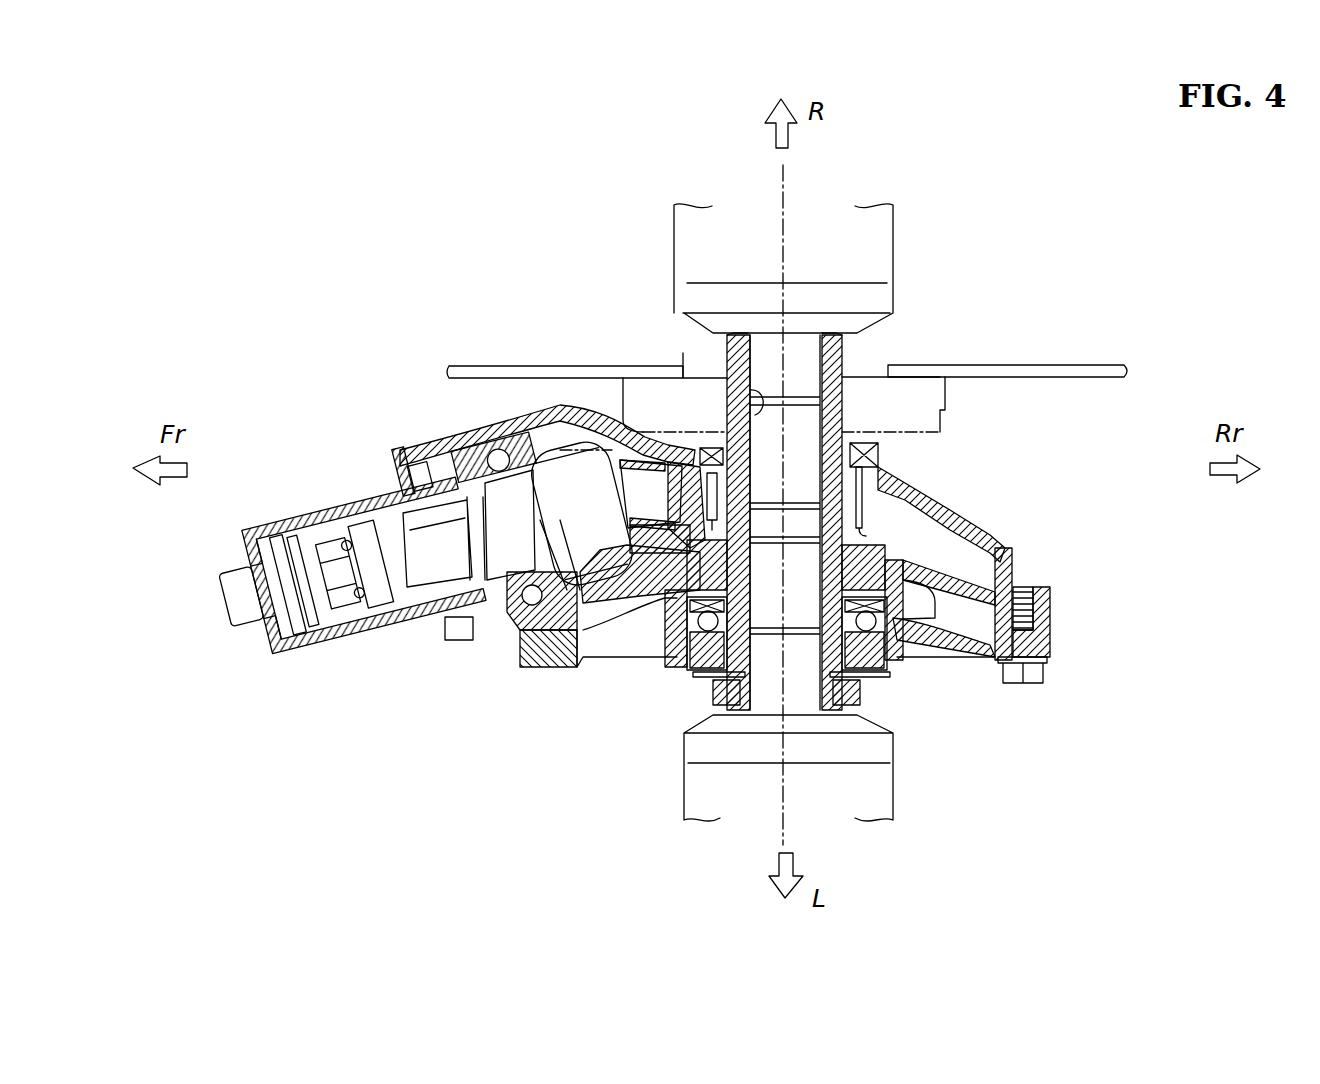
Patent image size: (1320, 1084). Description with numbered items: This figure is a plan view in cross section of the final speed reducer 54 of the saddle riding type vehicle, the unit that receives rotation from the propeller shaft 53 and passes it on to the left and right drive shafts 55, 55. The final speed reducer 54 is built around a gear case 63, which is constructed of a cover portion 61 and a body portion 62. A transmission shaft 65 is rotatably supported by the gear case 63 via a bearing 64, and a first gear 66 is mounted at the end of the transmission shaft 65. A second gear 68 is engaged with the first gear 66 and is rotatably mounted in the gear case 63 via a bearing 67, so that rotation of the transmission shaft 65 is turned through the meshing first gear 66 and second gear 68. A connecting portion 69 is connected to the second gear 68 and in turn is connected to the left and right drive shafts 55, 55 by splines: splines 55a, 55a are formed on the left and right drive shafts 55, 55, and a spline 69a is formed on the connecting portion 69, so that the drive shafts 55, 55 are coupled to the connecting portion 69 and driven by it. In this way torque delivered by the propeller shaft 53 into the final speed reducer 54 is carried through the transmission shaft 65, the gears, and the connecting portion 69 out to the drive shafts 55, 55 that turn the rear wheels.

The propeller shaft 53 is at (247, 657).
The final speed reducer 54 is at (462, 278).
The drive shaft 55 is at (880, 463).
The spline 55a is at (810, 490).
The cover portion 61 is at (1053, 647).
The body portion 62 is at (1007, 553).
The gear case 63 is at (1123, 618).
The bearing 64 is at (543, 633).
The transmission shaft 65 is at (445, 560).
The first gear 66 is at (592, 548).
The bearing 67 is at (893, 650).
The second gear 68 is at (960, 647).
The connecting portion 69 is at (850, 380).
The spline 69a is at (762, 393).